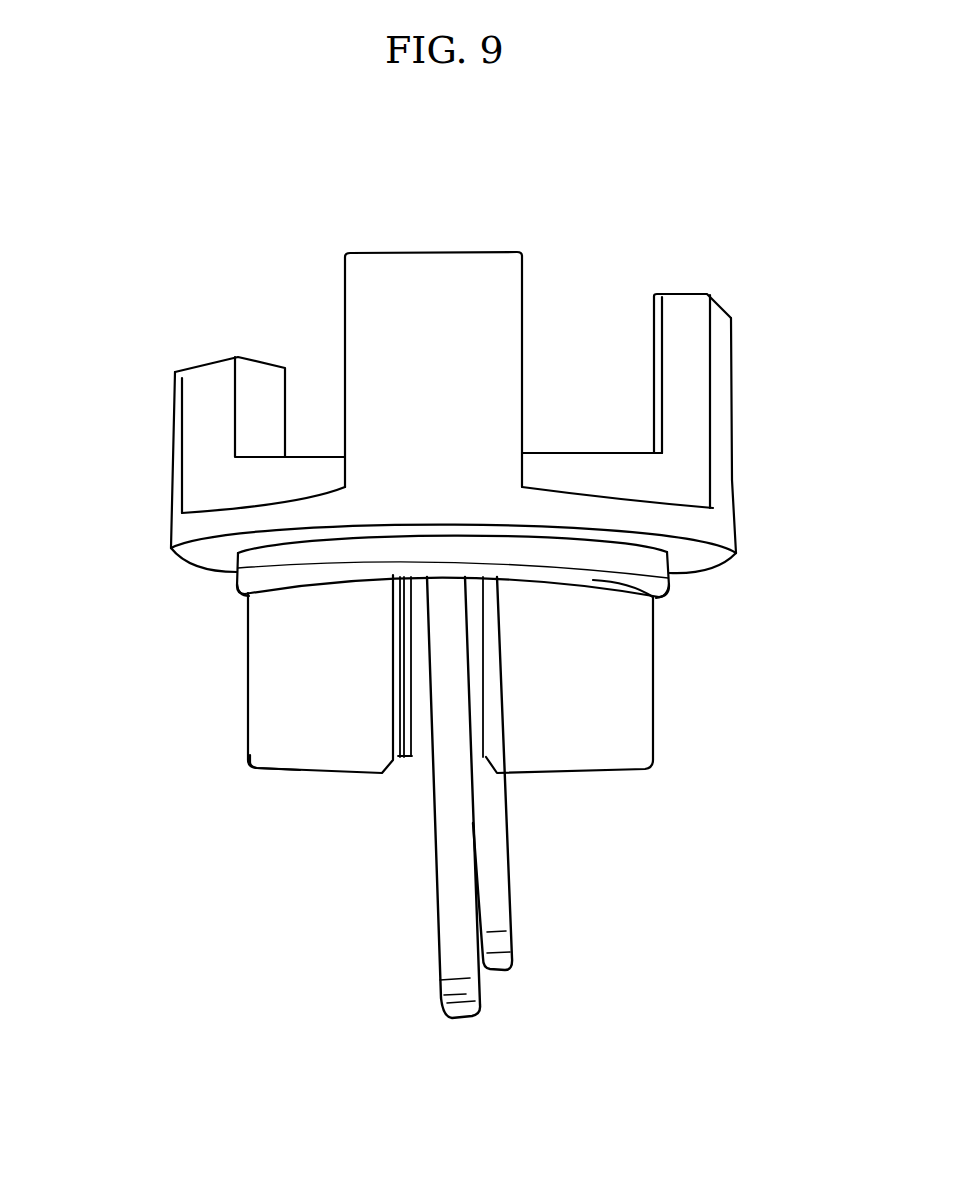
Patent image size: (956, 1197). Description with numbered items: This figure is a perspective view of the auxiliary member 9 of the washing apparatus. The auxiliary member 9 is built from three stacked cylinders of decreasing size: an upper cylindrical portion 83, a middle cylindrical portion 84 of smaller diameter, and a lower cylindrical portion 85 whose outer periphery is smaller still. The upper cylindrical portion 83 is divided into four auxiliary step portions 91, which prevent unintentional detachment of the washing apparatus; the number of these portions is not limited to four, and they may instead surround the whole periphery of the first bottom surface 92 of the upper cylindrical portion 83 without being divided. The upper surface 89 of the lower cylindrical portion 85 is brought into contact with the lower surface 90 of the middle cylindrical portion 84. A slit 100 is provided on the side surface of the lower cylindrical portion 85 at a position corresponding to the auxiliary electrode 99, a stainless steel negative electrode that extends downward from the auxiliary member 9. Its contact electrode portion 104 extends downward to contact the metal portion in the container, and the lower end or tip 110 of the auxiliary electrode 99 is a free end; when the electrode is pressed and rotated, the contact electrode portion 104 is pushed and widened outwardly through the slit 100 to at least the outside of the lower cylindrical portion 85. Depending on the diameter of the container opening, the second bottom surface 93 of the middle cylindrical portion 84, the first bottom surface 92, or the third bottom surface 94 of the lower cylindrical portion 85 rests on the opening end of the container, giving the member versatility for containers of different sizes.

The auxiliary member 9 is at (748, 281).
The upper cylindrical portion 83 is at (698, 417).
The auxiliary step portion 91 is at (432, 272).
The first bottom surface 92 is at (713, 552).
The middle cylindrical portion 84 is at (233, 569).
The second bottom surface 93 is at (243, 596).
The lower surface 90 is at (657, 598).
The upper surface 89 is at (650, 603).
The lower cylindrical portion 85 is at (275, 678).
The third bottom surface 94 is at (290, 772).
The slit 100 is at (420, 735).
The auxiliary electrode 99 is at (462, 870).
The contact electrode portion 104 is at (443, 915).
The lower end (tip) 110 is at (463, 995).